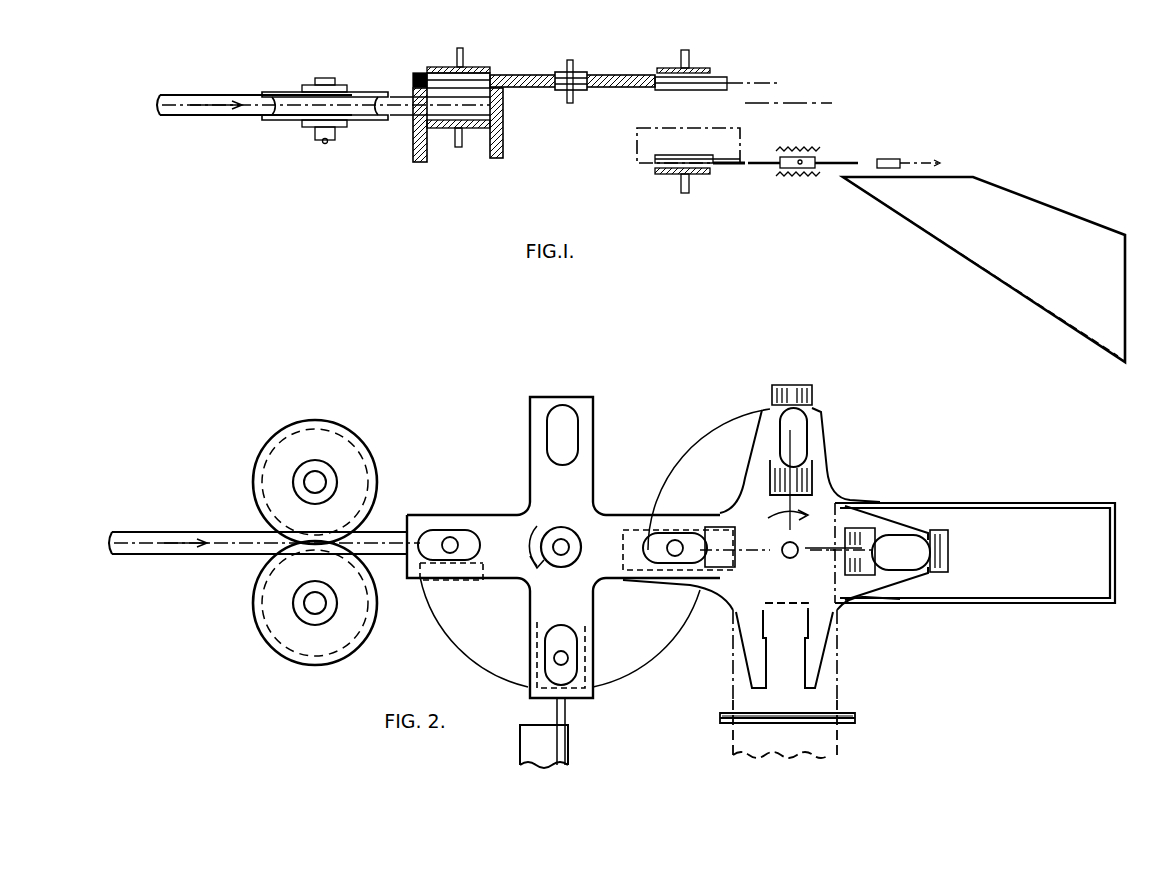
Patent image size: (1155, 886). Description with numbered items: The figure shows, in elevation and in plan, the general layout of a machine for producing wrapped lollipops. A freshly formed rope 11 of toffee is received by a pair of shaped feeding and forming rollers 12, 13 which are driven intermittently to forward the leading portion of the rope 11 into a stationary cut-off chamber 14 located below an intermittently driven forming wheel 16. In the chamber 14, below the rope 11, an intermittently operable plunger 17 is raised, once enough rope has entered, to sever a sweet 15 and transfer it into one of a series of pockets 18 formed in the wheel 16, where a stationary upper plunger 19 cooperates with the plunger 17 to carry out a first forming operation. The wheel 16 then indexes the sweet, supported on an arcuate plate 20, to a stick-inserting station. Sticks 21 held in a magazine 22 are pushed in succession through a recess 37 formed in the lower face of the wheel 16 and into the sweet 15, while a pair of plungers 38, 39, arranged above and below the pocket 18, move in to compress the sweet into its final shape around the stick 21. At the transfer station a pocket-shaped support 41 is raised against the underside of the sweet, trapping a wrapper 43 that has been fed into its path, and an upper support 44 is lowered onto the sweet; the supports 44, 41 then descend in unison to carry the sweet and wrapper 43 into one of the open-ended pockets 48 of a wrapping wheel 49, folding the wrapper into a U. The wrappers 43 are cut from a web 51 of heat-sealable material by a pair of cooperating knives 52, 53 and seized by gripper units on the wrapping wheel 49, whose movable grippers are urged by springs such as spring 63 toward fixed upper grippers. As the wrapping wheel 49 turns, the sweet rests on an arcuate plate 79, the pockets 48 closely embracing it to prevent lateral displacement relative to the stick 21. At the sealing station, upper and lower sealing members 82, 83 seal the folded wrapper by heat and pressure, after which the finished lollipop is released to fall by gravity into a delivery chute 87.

In FIG. 1, the rope 11 is at (181, 104).
In FIG. 2, the rope 11 is at (230, 537).
In FIG. 1, the feeding and forming roller 12 is at (296, 103).
In FIG. 2, the feeding and forming roller 12 is at (290, 455).
In FIG. 2, the feeding and forming roller 13 is at (330, 634).
In FIG. 1, the cut-off chamber 14 is at (417, 116).
In FIG. 1, the sweet 15 is at (896, 158).
In FIG. 2, the sweet 15 is at (802, 435).
In FIG. 1, the forming wheel 16 is at (520, 85).
In FIG. 2, the forming wheel 16 is at (534, 538).
In FIG. 1, the plunger 17 is at (482, 132).
In FIG. 1, the pocket 18 is at (436, 73).
In FIG. 1, the upper plunger 19 is at (476, 73).
In FIG. 2, the upper plunger 19 is at (430, 538).
In FIG. 2, the arcuate plate 20 is at (465, 635).
In FIG. 2, the stick 21 is at (567, 716).
In FIG. 2, the magazine 22 is at (540, 747).
In FIG. 2, the recess 37 is at (567, 397).
In FIG. 1, the plunger 38 is at (578, 76).
In FIG. 2, the plunger 38 is at (566, 671).
In FIG. 1, the plunger 39 is at (584, 92).
In FIG. 1, the support 41 is at (695, 176).
In FIG. 1, the wrapper 43 is at (645, 144).
In FIG. 2, the wrapper 43 is at (818, 699).
In FIG. 1, the upper support 44 is at (705, 71).
In FIG. 2, the upper support 44 is at (655, 545).
In FIG. 2, the pocket 48 is at (812, 680).
In FIG. 1, the wrapping wheel 49 is at (768, 170).
In FIG. 2, the wrapping wheel 49 is at (752, 510).
In FIG. 2, the web 51 is at (820, 743).
In FIG. 2, the knife 52 is at (740, 722).
In FIG. 2, the knife 53 is at (727, 712).
In FIG. 1, the spring 63 is at (832, 103).
In FIG. 2, the arcuate plate 79 is at (735, 432).
In FIG. 1, the upper sealing member 82 is at (811, 147).
In FIG. 1, the lower sealing member 83 is at (807, 178).
In FIG. 1, the delivery chute 87 is at (1029, 212).
In FIG. 2, the delivery chute 87 is at (1012, 532).